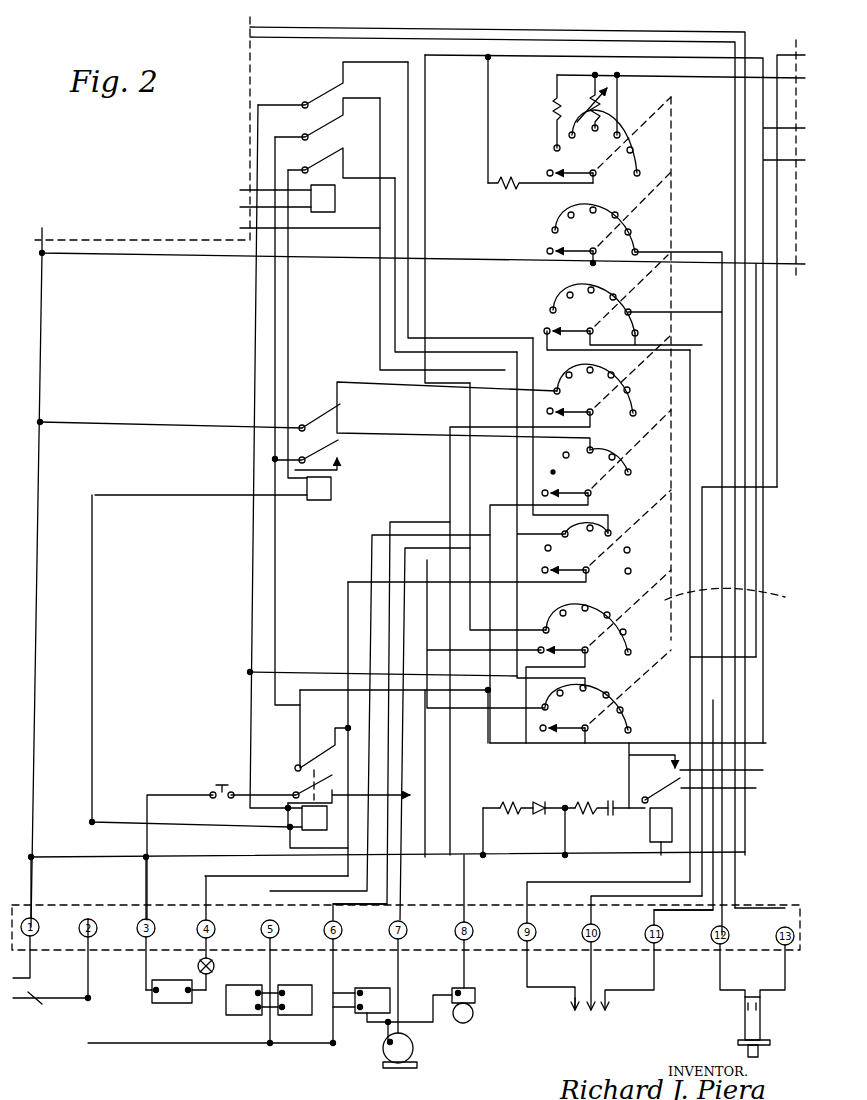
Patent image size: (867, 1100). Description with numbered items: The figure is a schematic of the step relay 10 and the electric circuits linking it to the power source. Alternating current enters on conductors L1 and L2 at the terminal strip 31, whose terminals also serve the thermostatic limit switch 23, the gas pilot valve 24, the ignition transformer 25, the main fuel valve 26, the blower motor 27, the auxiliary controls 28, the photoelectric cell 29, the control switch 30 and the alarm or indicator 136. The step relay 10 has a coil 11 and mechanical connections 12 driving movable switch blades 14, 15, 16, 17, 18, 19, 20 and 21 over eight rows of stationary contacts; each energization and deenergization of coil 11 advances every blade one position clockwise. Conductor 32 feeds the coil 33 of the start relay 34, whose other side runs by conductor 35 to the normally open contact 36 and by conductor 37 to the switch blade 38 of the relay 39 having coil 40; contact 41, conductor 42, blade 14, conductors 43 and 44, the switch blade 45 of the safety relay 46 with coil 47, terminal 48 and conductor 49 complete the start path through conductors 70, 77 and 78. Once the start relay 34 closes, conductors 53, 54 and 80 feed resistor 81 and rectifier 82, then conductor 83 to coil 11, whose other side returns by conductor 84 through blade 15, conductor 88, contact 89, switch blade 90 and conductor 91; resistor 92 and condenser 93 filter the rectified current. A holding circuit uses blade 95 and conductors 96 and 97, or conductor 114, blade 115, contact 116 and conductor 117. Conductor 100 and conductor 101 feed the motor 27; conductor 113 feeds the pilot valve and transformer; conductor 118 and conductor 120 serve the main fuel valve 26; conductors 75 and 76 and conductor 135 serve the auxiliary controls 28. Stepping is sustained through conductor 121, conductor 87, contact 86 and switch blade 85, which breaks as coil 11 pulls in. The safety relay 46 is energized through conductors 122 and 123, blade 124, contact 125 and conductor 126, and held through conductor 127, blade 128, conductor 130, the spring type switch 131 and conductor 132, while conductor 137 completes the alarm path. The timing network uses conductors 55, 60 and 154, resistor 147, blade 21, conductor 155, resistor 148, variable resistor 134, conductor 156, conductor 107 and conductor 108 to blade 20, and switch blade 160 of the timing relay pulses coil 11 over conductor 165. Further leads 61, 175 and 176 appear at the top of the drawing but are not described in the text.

The step relay 10 is at (676, 470).
The electrical coil 11 is at (645, 850).
The mechanical connections 12 is at (793, 597).
The movable switch blade 14 is at (568, 740).
The movable switch blade 15 is at (592, 656).
The movable switch blade 16 is at (590, 576).
The movable switch blade 17 is at (592, 497).
The movable switch blade 18 is at (594, 418).
The movable switch blade 19 is at (584, 335).
The movable switch blade 20 is at (597, 254).
The movable switch blade 21 is at (597, 176).
The thermostatic limit switch 23 is at (165, 1003).
The gas pilot valve 24 is at (240, 1018).
The ignition transformer 25 is at (292, 1018).
The main fuel valve 26 is at (363, 1016).
The blower motor 27 is at (396, 1069).
The auxiliary controls 28 is at (586, 1015).
The photoelectric cell 29 is at (745, 1020).
The control switch 30 is at (212, 978).
The terminal strip 31 is at (58, 858).
The conductor 32 is at (170, 497).
The coil 33 is at (320, 500).
The start relay 34 is at (312, 400).
The conductor 35 is at (340, 470).
The stationary contact 36 is at (342, 455).
The conductor 37 is at (288, 318).
The movable switch blade 38 is at (300, 134).
The relay 39 is at (318, 86).
The coil 40 is at (337, 200).
The contact 41 is at (345, 112).
The conductor 42 is at (380, 283).
The conductor 43 is at (500, 742).
The conductor 44 is at (425, 714).
The movable switch blade 45 is at (318, 752).
The safety relay 46 is at (293, 762).
The coil 47 is at (296, 836).
The terminal 48 is at (334, 738).
The conductor 49 is at (348, 585).
The conductor 53 is at (190, 818).
The conductor 54 is at (445, 858).
The conductor 55 is at (746, 392).
The conductor 60 is at (458, 58).
The conductor 61 is at (425, 205).
The conductor 70 is at (42, 470).
The conductor 75 is at (756, 657).
The conductor 76 is at (777, 487).
The conductor 77 is at (458, 425).
The conductor 78 is at (148, 878).
The conductor 80 is at (483, 836).
The resistor 81 is at (502, 803).
The rectifier 82 is at (539, 800).
The conductor 83 is at (578, 853).
The conductor 84 is at (650, 826).
The movable switch blade 85 is at (756, 788).
The contact 86 is at (763, 770).
The conductor 87 is at (636, 768).
The conductor 88 is at (427, 600).
The contact 89 is at (357, 412).
The switch blade 90 is at (300, 424).
The conductor 91 is at (96, 422).
The resistor 92 is at (580, 802).
The condenser 93 is at (610, 800).
The movable switch blade 95 is at (298, 458).
The conductor 96 is at (288, 464).
The conductor 97 is at (273, 603).
The conductor 100 is at (196, 1044).
The conductor 101 is at (390, 522).
The conductor 107 is at (704, 254).
The conductor 108 is at (140, 258).
The conductor 113 is at (372, 548).
The conductor 114 is at (276, 290).
The movable switch blade 115 is at (342, 144).
The stationary contact 116 is at (345, 162).
The conductor 117 is at (447, 352).
The conductor 118 is at (390, 502).
The conductor 120 is at (490, 505).
The conductor 121 is at (365, 382).
The conductor 122 is at (292, 816).
The conductor 123 is at (252, 565).
The movable switch blade 124 is at (300, 104).
The contact 125 is at (345, 80).
The conductor 126 is at (412, 283).
The conductor 127 is at (410, 795).
The movable switch blade 128 is at (294, 790).
The conductor 130 is at (262, 794).
The normally closed spring type switch 131 is at (218, 790).
The conductor 132 is at (147, 800).
The variable resistor 134 is at (585, 105).
The conductor 135 is at (714, 722).
The alarm or indicator 136 is at (460, 1025).
The conductor 137 is at (288, 672).
The resistor 147 is at (540, 192).
The resistor 148 is at (552, 100).
The conductor 154 is at (488, 150).
The conductor 155 is at (548, 122).
The conductor 156 is at (723, 78).
The movable switch blade 160 is at (618, 90).
The conductor 165 is at (764, 342).
The conductor 175 is at (255, 26).
The conductor 176 is at (268, 40).
The conductor L1 is at (32, 968).
The conductor L2 is at (52, 1012).